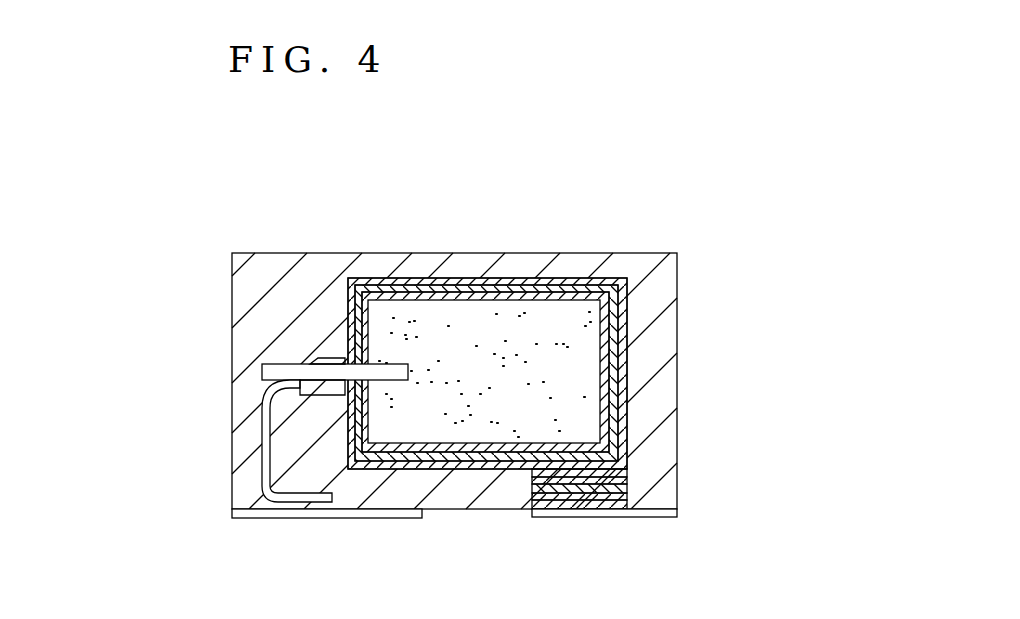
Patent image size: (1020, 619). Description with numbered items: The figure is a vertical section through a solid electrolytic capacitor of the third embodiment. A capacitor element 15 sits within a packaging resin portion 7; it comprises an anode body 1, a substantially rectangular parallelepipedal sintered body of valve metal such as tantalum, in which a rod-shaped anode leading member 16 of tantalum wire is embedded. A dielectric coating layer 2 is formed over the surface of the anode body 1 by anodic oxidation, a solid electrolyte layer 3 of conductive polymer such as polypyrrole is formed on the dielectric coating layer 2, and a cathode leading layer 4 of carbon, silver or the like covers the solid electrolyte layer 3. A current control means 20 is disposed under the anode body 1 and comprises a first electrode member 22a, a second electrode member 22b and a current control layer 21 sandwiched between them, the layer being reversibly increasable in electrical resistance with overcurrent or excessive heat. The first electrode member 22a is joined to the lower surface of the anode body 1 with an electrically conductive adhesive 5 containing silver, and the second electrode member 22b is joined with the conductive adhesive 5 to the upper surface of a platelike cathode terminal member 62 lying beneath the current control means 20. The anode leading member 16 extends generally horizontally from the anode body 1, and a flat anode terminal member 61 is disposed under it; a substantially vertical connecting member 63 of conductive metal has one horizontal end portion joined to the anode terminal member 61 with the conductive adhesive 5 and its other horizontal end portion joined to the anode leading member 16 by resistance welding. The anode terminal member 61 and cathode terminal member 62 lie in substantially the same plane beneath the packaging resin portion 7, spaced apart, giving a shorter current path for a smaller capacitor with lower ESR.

The packaging resin portion 7 is at (273, 277).
The capacitor element 15 is at (487, 305).
The anode body 1 is at (538, 192).
The dielectric coating layer 2 is at (433, 296).
The solid electrolyte layer 3 is at (465, 288).
The cathode leading layer 4 is at (519, 282).
The anode leading member 16 is at (278, 370).
The connecting member 63 is at (267, 433).
The electrically conductive adhesive 5 is at (310, 507).
The current control means 20 is at (671, 457).
The current control layer 21 is at (627, 489).
The first electrode member 22a is at (627, 477).
The second electrode member 22b is at (639, 500).
The anode terminal member 61 is at (381, 513).
The cathode terminal member 62 is at (594, 512).